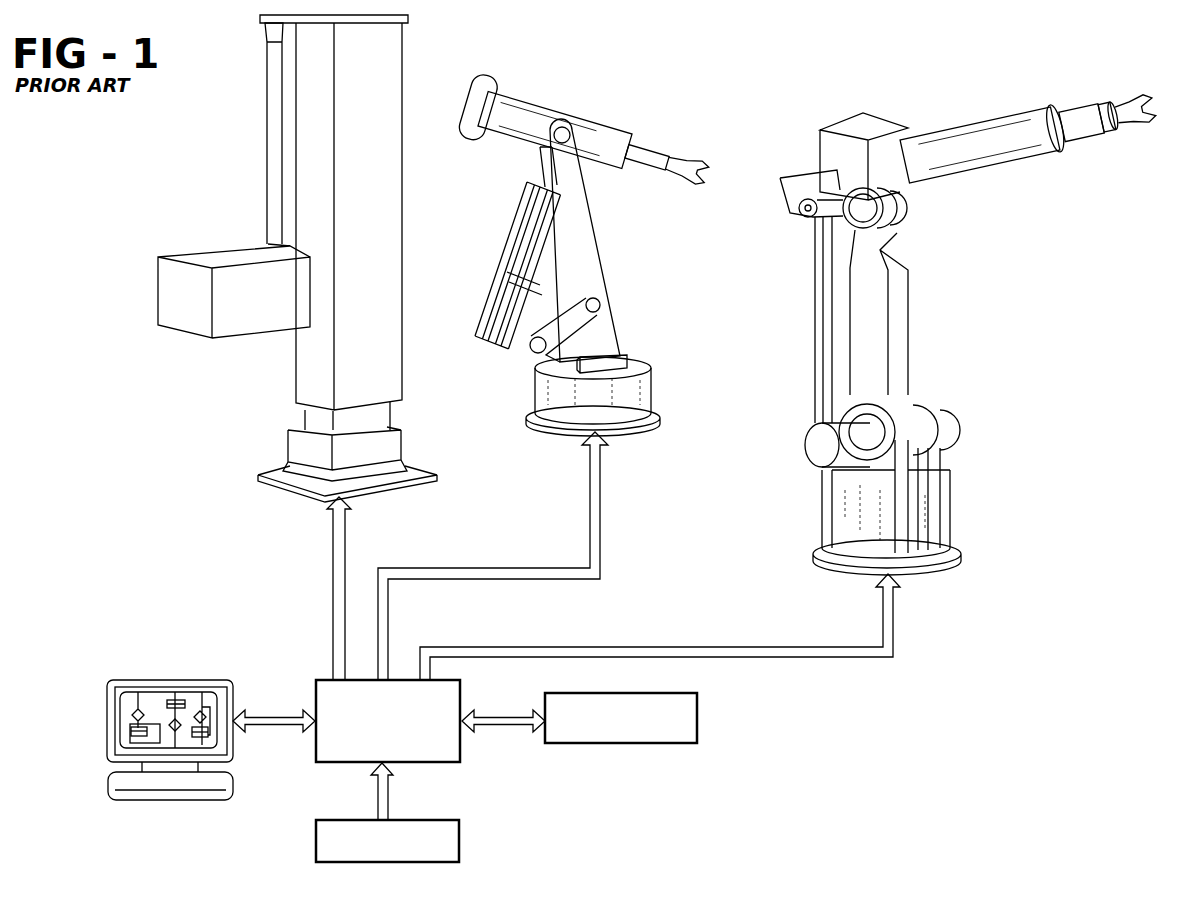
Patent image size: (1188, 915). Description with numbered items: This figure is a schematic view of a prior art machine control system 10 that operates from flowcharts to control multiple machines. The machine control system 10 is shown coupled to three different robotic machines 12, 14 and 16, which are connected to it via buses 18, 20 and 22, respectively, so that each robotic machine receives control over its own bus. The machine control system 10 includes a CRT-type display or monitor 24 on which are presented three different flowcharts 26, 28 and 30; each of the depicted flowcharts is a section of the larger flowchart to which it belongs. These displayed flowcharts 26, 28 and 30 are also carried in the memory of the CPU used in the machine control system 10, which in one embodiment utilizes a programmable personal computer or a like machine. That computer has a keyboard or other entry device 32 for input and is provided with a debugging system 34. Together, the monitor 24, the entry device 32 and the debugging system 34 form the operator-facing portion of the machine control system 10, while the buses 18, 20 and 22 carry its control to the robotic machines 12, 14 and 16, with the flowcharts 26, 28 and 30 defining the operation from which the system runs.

The machine control system 10 is at (432, 766).
The robotic machine 12 is at (395, 63).
The robotic machine 14 is at (610, 132).
The robotic machine 16 is at (970, 138).
The bus 18 is at (345, 535).
The bus 20 is at (600, 525).
The bus 22 is at (893, 628).
The CRT-type display or monitor 24 is at (170, 704).
The flowchart 26 is at (138, 715).
The flowchart 28 is at (167, 700).
The flowchart 30 is at (210, 708).
The keyboard or other entry device 32 is at (460, 835).
The debugging system 34 is at (668, 693).